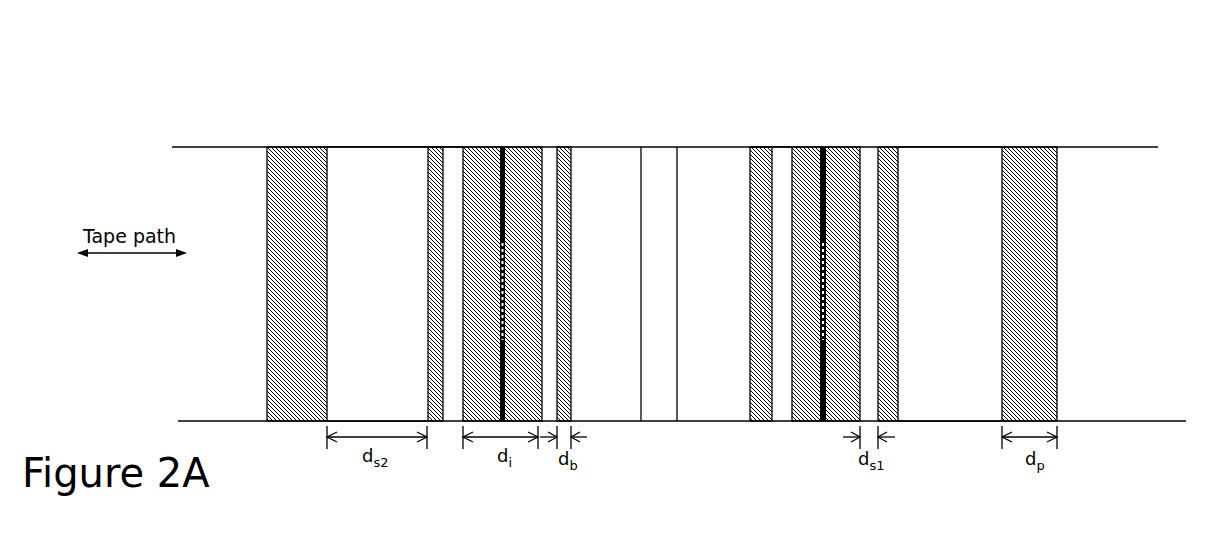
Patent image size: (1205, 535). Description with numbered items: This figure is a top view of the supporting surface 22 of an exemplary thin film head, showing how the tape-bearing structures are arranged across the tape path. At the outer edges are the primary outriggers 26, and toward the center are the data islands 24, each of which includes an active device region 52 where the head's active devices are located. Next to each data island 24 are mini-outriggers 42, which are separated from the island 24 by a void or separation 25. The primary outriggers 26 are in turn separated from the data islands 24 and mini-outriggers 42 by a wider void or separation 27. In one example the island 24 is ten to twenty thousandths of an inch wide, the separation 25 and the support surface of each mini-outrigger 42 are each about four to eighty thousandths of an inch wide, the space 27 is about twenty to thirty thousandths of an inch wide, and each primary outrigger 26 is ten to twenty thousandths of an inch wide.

The supporting surface 22 is at (248, 124).
The data island 24 is at (473, 152).
The separation 25 is at (452, 183).
The primary outrigger 26 is at (303, 147).
The separation 27 is at (367, 172).
The mini-outrigger 42 is at (433, 150).
The active device region 52 is at (507, 150).